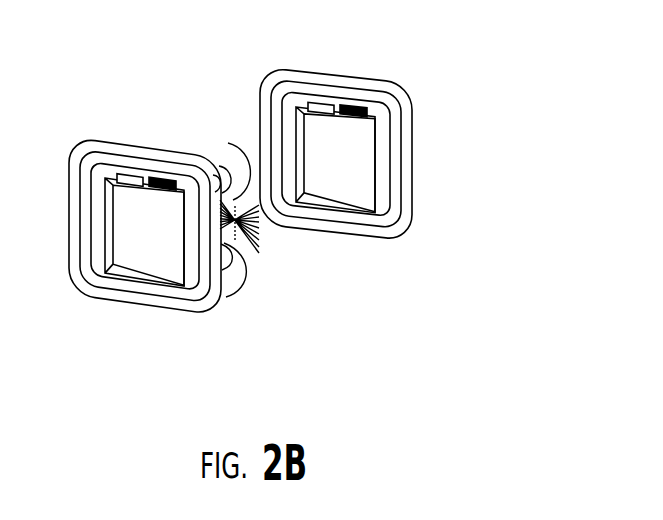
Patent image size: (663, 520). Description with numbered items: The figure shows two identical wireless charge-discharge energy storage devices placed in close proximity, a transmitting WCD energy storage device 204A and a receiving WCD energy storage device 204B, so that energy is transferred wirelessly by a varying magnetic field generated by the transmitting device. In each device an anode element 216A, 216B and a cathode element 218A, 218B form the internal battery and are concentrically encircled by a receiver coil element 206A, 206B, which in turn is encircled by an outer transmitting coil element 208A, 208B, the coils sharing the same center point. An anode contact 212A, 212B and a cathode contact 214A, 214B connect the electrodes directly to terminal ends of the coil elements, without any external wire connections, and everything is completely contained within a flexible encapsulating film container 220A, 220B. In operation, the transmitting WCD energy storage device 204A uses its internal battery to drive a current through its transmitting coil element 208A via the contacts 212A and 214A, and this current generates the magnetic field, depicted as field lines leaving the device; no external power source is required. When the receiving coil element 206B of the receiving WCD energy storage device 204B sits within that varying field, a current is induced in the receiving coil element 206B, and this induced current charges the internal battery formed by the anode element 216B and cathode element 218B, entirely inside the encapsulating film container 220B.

The transmitting WCD energy storage device 204A is at (177, 239).
The receiver coil element 206A is at (198, 288).
The transmitting coil element 208A is at (205, 275).
The encapsulating film container 220A is at (101, 137).
The anode contact 212A is at (128, 175).
The cathode contact 214A is at (160, 177).
The anode element 216A is at (120, 253).
The cathode element 218A is at (134, 272).
The receiving WCD energy storage device 204B is at (378, 160).
The receiving coil element 206B is at (378, 207).
The transmitter coil element 208B is at (397, 182).
The encapsulating film container 220B is at (285, 67).
The anode contact 212B is at (325, 103).
The cathode contact 214B is at (360, 108).
The anode element 216B is at (343, 142).
The cathode element 218B is at (363, 208).